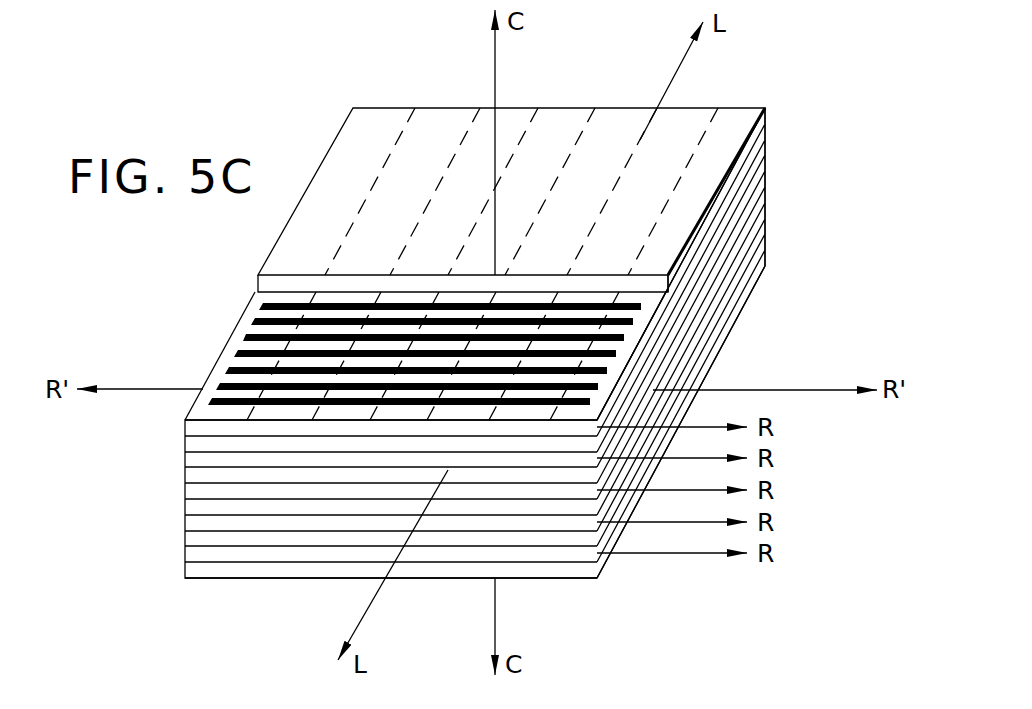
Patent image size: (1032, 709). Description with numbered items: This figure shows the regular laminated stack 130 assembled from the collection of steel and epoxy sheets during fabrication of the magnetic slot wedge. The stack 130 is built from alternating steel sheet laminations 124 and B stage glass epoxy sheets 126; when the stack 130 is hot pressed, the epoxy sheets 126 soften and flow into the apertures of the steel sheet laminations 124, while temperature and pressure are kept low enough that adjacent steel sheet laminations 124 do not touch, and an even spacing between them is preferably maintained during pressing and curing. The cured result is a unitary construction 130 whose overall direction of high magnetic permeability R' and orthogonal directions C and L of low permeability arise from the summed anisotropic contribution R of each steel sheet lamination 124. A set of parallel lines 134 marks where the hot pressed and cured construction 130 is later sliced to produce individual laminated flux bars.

The steel sheet laminations 124 is at (183, 428).
The B stage glass epoxy sheets 126 is at (767, 263).
The laminated stack 130 is at (252, 282).
The parallel lines 134 is at (458, 147).